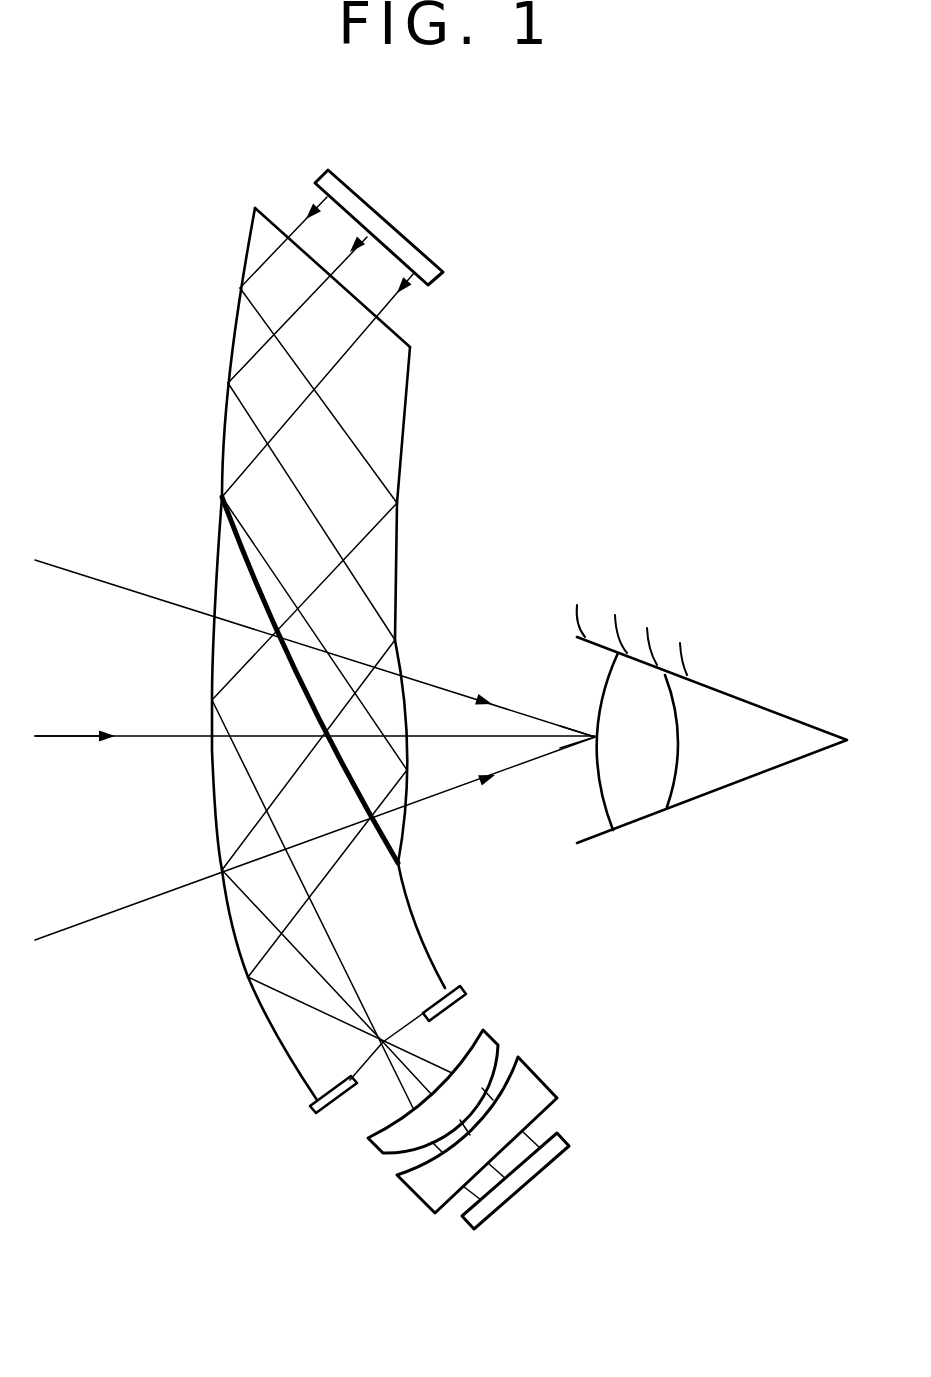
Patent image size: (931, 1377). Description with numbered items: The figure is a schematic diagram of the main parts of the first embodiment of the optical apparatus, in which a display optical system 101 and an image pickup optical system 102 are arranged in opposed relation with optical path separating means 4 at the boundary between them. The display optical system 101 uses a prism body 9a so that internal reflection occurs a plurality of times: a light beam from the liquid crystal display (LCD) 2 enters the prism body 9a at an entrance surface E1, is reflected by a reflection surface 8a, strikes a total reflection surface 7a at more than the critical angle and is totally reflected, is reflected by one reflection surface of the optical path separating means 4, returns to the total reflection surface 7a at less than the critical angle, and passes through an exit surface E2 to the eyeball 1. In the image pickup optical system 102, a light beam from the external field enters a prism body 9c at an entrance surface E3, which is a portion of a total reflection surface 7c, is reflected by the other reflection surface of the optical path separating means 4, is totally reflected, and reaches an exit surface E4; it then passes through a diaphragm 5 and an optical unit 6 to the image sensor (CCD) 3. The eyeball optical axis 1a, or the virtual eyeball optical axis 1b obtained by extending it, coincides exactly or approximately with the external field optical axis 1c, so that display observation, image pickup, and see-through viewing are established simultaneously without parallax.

The eyeball 1 is at (765, 775).
The eyeball optical axis 1a is at (533, 742).
The virtual eyeball optical axis 1b is at (145, 735).
The external field optical axis 1c is at (40, 740).
The liquid crystal display (LCD) 2 is at (418, 248).
The image sensor (CCD) 3 is at (495, 1213).
The optical path separating means 4 is at (225, 574).
The diaphragm 5 is at (325, 1113).
The optical unit 6 is at (597, 1123).
The total reflection surface 7a is at (398, 562).
The total reflection surface 7c is at (223, 913).
The reflection surface 8a is at (237, 313).
The prism body 9a is at (393, 413).
The prism body 9c is at (218, 987).
The entrance surface E1 is at (398, 334).
The exit surface E2 is at (407, 697).
The entrance surface E3 is at (212, 767).
The exit surface E4 is at (440, 1028).
The display optical system 101 is at (283, 535).
The image pickup optical system 102 is at (235, 801).